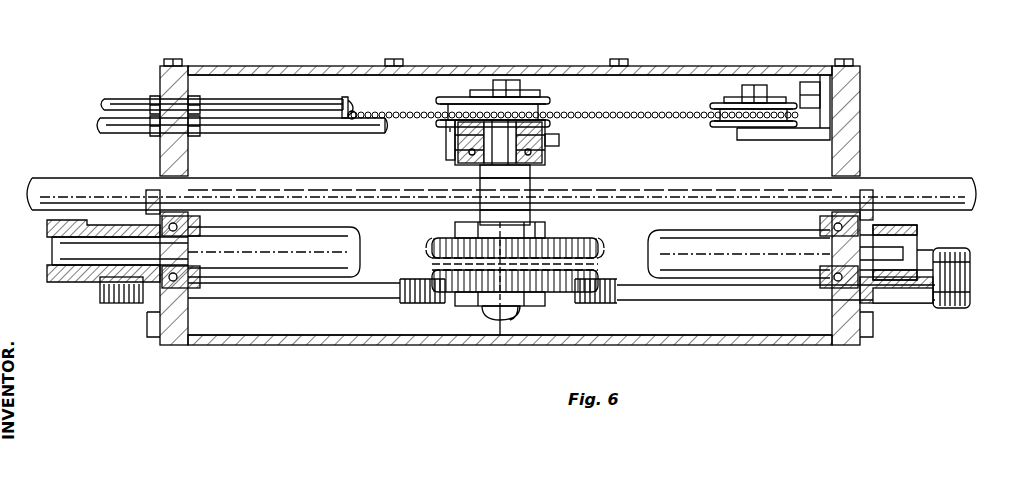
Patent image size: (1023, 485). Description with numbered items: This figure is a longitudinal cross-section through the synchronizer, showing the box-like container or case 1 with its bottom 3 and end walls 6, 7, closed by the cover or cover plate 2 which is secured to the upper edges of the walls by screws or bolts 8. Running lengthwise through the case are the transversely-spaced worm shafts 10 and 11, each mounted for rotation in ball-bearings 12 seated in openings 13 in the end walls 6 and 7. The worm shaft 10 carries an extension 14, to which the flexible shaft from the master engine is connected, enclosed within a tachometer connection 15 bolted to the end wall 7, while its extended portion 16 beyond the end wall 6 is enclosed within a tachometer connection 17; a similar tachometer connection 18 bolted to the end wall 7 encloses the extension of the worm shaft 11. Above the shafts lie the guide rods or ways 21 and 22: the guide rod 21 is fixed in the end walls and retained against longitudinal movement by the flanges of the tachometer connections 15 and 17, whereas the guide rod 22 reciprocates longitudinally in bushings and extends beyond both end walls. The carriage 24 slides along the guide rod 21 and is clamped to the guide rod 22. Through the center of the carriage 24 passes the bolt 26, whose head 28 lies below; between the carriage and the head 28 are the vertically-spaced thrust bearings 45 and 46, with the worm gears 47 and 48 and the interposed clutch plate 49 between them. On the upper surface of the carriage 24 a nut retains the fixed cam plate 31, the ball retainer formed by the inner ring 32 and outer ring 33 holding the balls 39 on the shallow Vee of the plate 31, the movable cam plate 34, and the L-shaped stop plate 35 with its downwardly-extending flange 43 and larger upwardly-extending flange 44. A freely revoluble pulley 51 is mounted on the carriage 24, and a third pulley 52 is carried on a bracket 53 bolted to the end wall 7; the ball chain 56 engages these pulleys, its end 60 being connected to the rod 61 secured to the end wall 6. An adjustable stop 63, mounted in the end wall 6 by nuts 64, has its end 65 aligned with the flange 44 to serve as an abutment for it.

The container or case 1 is at (430, 345).
The cover or cover plate 2 is at (478, 66).
The bottom 3 is at (512, 345).
The end wall 6 is at (160, 150).
The end wall 7 is at (862, 136).
The screws or bolts 8 is at (176, 59).
The worm shaft 10 is at (347, 243).
The worm shaft 11 is at (416, 288).
The ball-bearings 12 is at (176, 290).
The openings 13 is at (188, 288).
The extension 14 is at (905, 252).
The tachometer connection 15 is at (905, 240).
The extended portion of the shaft 16 is at (60, 250).
The tachometer connection 17 is at (76, 284).
The tachometer connection 18 is at (945, 308).
The guide rod or way 21 is at (275, 184).
The guide rod or way 22 is at (84, 186).
The carriage 24 is at (530, 195).
The bolt 26 is at (470, 170).
The head of the bolt 28 is at (522, 310).
The fixed cam plate 31 is at (518, 176).
The inner ring 32 is at (520, 142).
The outer ring 33 is at (550, 152).
The movable cam plate 34 is at (550, 135).
The stop plate 35 is at (556, 120).
The balls 39 is at (602, 110).
The downwardly-extending flange 43 is at (456, 150).
The upwardly-extending flange 44 is at (450, 128).
The thrust bearing 45 is at (546, 238).
The thrust bearing 46 is at (476, 306).
The worm gear 47 is at (588, 256).
The worm gear 48 is at (490, 262).
The clutch plate 49 is at (440, 250).
The pulley 51 is at (542, 102).
The pulley 52 is at (718, 128).
The bracket 53 is at (795, 141).
The ball chain 56 is at (560, 150).
The end of the chain 60 is at (358, 113).
The rod 61 is at (288, 100).
The adjustable stop 63 is at (285, 136).
The nuts 64 is at (152, 104).
The end of the stop 65 is at (390, 133).